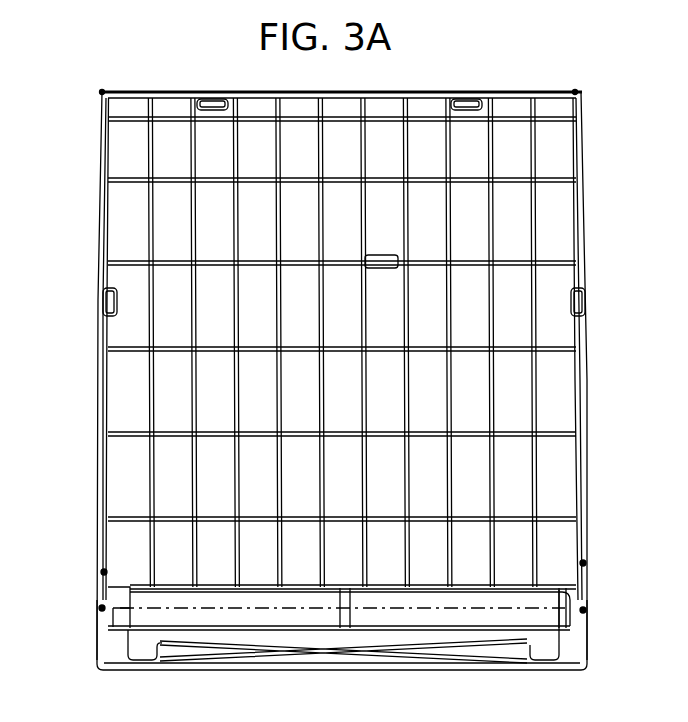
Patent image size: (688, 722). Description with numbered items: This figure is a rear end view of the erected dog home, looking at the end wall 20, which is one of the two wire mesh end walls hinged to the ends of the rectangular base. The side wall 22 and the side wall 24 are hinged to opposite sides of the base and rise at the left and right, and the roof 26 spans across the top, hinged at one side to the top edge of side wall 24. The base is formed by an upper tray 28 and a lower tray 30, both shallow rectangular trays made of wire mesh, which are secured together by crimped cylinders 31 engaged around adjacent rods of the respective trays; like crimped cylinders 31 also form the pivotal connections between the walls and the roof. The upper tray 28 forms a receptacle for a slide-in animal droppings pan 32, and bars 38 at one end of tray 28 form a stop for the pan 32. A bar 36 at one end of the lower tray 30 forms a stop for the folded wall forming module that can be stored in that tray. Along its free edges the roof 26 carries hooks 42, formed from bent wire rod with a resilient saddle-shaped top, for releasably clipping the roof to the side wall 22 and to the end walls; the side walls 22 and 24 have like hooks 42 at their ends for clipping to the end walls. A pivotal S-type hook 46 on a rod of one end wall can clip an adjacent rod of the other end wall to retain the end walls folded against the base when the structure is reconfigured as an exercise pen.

The end wall 20 is at (492, 463).
The side wall 22 is at (98, 416).
The side wall 24 is at (585, 380).
The roof 26 is at (365, 93).
The upper tray 28 is at (101, 607).
The lower tray 30 is at (100, 665).
The crimped cylinders 31 is at (104, 571).
The animal droppings pan 32 is at (213, 620).
The bar 36 is at (380, 655).
The bars 38 is at (108, 590).
The hooks 42 is at (216, 112).
The pivotal S-type hook 46 is at (384, 270).